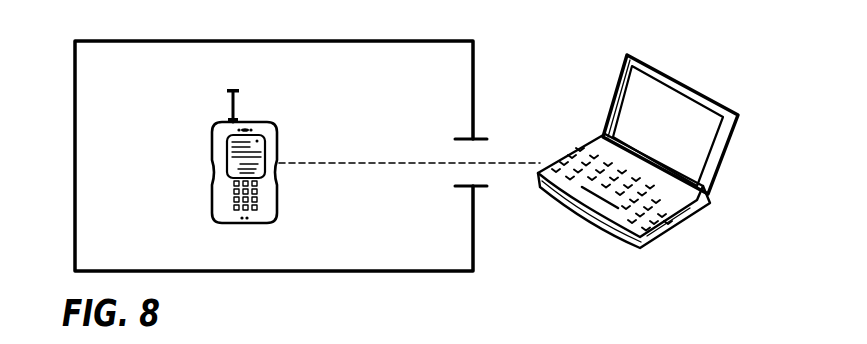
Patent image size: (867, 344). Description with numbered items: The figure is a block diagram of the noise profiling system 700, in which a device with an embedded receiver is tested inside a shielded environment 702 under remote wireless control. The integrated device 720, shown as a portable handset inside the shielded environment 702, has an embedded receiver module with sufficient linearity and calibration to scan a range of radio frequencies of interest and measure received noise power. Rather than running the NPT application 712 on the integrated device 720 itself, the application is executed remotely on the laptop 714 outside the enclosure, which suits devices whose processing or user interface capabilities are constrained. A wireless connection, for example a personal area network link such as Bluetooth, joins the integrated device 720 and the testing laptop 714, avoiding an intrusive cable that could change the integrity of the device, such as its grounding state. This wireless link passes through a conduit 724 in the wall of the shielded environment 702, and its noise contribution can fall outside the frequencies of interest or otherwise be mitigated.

The noise profiling system 700 is at (569, 59).
The shielded environment 702 is at (474, 57).
The NPT application 712 is at (632, 53).
The laptop 714 is at (678, 105).
The integrated device 720 is at (272, 124).
The conduit 724 is at (487, 166).